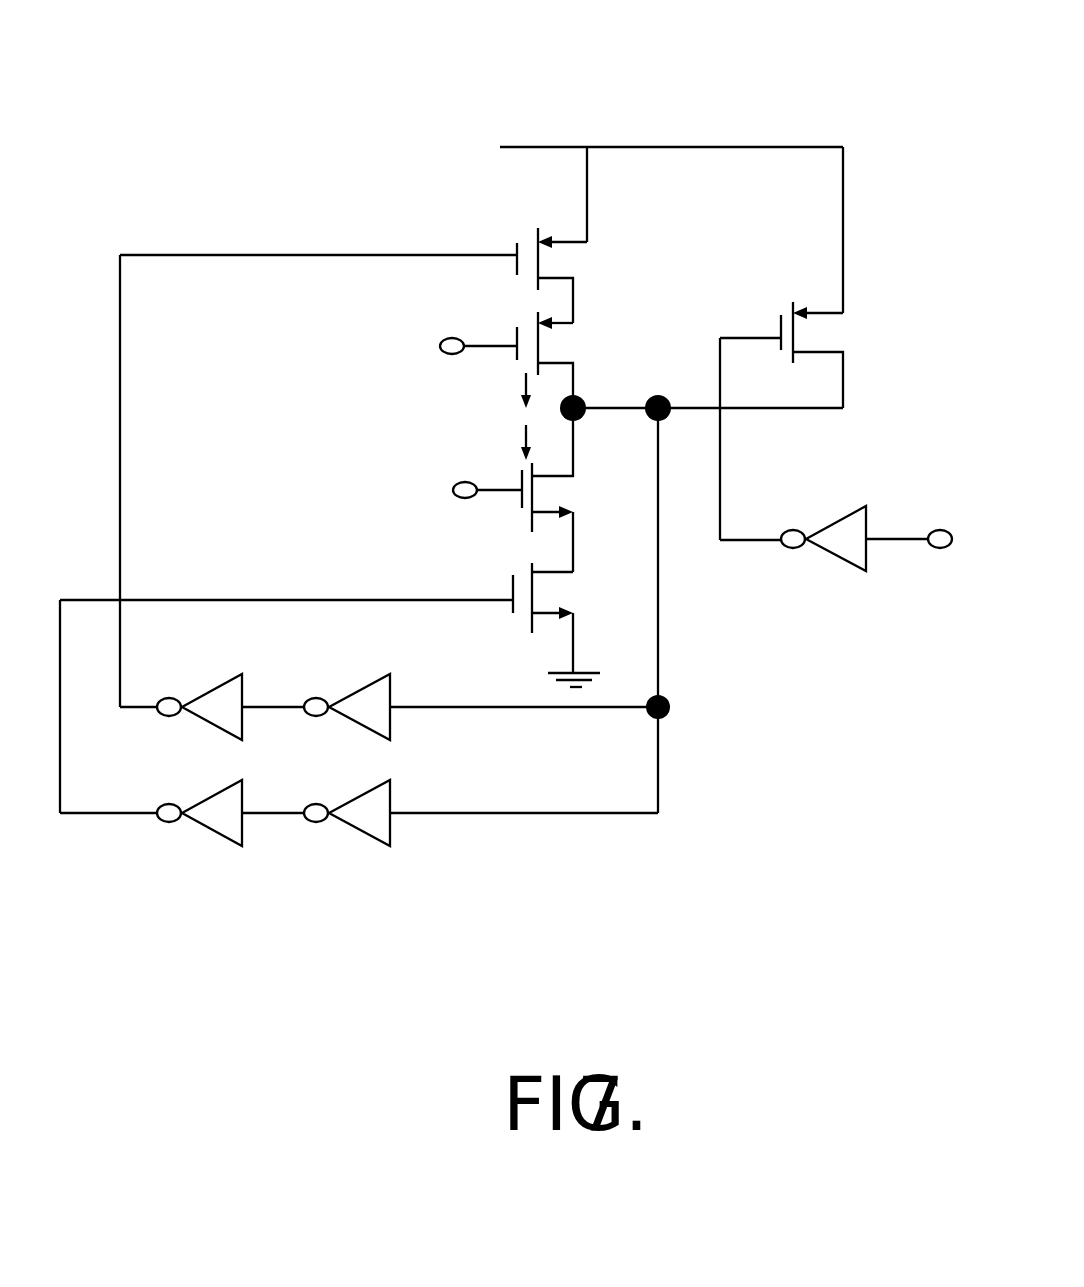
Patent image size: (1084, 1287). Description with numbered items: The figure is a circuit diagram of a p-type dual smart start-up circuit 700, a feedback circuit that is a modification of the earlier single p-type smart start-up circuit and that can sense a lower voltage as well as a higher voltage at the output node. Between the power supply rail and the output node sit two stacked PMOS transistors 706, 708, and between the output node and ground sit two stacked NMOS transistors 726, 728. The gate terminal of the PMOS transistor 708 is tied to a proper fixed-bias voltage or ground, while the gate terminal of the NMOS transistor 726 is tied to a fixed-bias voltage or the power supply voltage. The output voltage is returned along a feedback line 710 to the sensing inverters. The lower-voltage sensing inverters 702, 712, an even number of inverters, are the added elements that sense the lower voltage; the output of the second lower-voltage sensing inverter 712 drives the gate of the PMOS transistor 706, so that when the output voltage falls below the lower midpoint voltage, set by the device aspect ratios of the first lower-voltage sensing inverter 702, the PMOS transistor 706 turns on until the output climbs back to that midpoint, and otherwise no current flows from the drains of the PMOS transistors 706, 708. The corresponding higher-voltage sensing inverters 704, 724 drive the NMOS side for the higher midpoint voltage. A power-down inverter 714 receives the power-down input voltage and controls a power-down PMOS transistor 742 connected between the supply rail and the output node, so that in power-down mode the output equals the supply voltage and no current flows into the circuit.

The p-type dual smart start-up circuit 700 is at (441, 66).
The first lower-voltage sensing inverter 702 is at (353, 728).
The inverter 704 is at (353, 836).
The PMOS transistor 706 is at (589, 247).
The PMOS transistor 708 is at (575, 328).
The feedback line 710 is at (571, 824).
The second lower-voltage sensing inverter 712 is at (217, 732).
The inverter 714 is at (843, 570).
The inverter 724 is at (199, 826).
The NMOS transistor 726 is at (572, 486).
The NMOS transistor MN2 728 is at (572, 586).
The PMOS power-down transistor MPPD1 742 is at (843, 310).